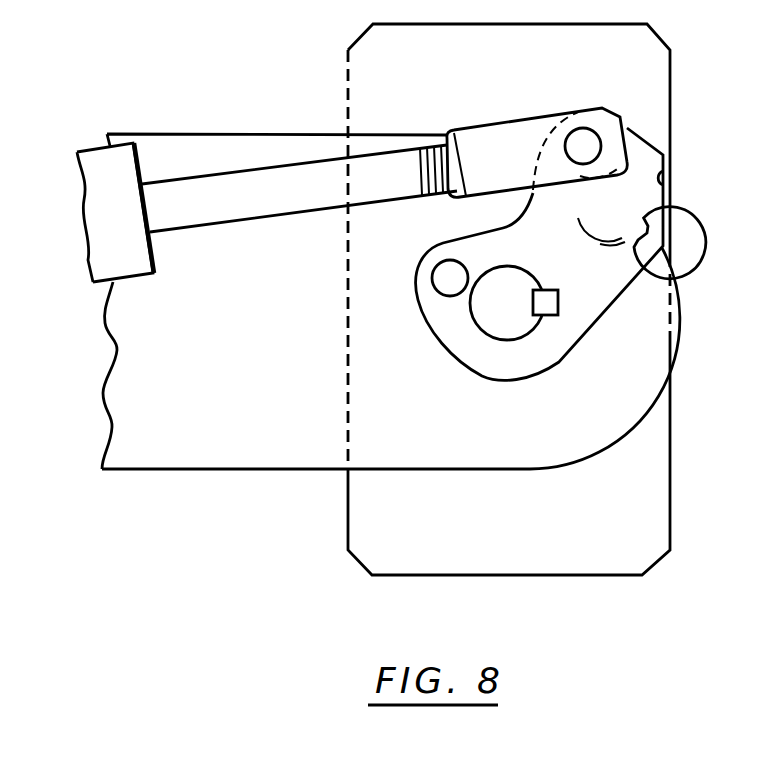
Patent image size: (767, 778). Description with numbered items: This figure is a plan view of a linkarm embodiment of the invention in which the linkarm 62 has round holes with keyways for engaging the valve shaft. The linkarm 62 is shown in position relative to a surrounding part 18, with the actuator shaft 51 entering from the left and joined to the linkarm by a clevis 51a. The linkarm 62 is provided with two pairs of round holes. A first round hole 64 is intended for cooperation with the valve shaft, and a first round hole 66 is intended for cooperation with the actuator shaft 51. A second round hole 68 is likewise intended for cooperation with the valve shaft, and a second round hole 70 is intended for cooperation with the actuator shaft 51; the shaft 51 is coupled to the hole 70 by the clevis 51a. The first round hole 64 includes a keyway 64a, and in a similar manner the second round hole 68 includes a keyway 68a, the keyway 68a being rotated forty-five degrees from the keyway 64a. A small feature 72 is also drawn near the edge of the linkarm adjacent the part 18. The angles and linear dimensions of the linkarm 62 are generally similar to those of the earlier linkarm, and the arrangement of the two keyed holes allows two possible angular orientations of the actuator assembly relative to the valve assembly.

The housing plate 18 is at (672, 441).
The actuator shaft 51 is at (275, 217).
The clevis 51a is at (520, 120).
The linkarm 62 is at (624, 305).
The first round hole 64 is at (483, 332).
The keyway 64a is at (558, 292).
The first round hole 66 is at (583, 128).
The second round hole 68 is at (581, 217).
The keyway 68a is at (617, 248).
The second round hole 70 is at (443, 292).
The pin 72 is at (667, 163).